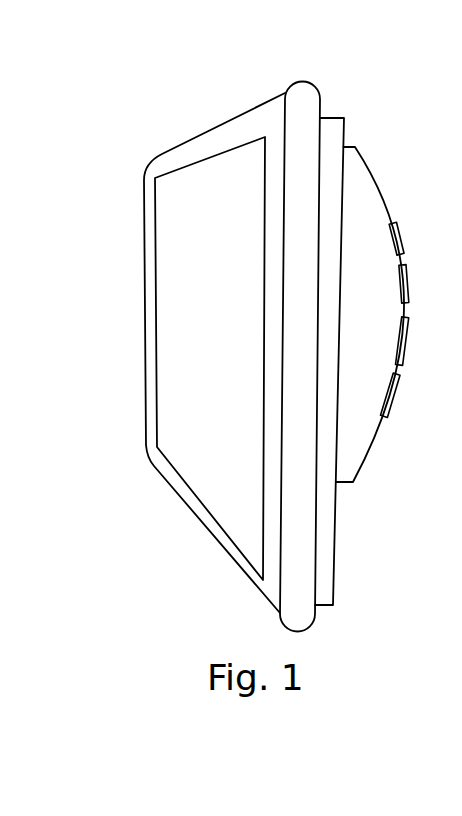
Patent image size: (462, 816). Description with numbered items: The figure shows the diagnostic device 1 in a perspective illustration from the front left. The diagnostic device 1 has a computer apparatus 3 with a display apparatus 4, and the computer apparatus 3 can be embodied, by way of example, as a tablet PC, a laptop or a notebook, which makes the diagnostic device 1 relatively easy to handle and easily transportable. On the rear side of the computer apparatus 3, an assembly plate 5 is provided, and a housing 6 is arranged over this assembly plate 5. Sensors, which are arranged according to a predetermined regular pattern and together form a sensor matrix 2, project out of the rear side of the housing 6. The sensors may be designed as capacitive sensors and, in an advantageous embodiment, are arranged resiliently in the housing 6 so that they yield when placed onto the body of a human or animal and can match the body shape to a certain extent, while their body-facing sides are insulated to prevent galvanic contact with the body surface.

The diagnostic device 1 is at (195, 93).
The sensor matrix 2 is at (414, 277).
The computer apparatus 3 is at (192, 152).
The display apparatus 4 is at (191, 353).
The assembly plate 5 is at (323, 552).
The housing 6 is at (353, 436).